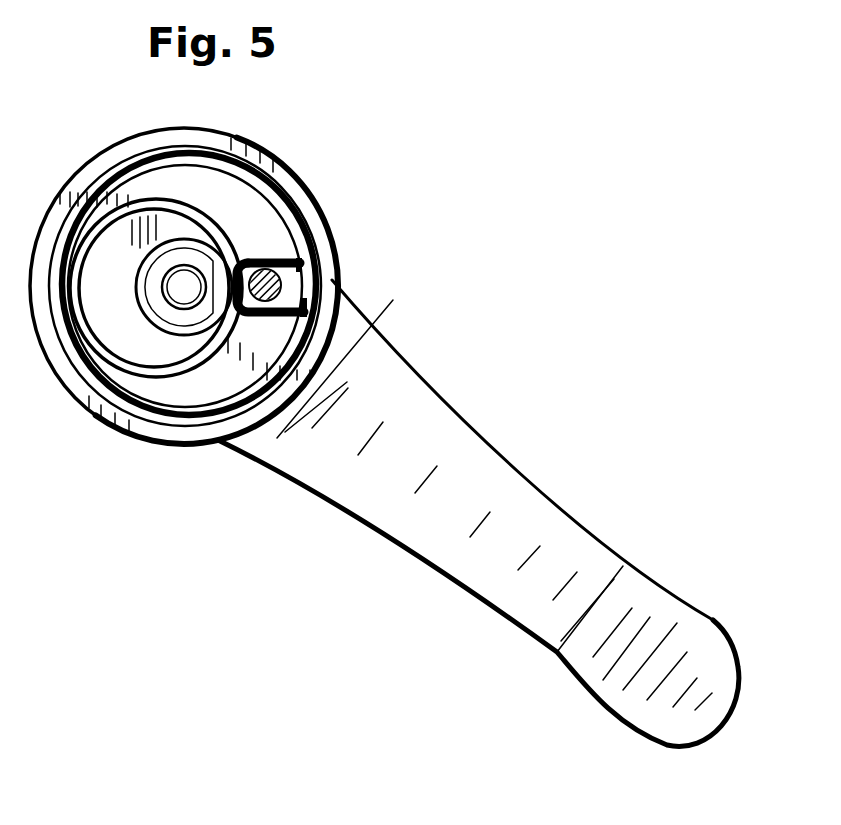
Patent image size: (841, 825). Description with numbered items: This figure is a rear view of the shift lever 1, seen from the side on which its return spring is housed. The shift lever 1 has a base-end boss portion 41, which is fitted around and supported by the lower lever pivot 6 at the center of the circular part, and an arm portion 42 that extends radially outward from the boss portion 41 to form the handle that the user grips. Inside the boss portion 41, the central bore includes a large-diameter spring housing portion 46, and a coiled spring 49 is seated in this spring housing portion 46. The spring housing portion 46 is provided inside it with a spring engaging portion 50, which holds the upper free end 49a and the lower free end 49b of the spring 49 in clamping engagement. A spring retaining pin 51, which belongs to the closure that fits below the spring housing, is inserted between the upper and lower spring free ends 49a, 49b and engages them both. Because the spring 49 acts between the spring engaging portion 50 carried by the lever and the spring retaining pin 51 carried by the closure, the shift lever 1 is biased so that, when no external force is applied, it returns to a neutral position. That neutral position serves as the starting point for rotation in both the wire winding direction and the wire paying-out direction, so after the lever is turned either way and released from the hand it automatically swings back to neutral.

The shift lever 1 is at (405, 366).
The lower lever pivot 6 is at (171, 333).
The base-end boss portion 41 is at (287, 165).
The arm portion 42 is at (436, 423).
The spring housing portion 46 is at (227, 188).
The coiled spring 49 is at (140, 200).
The upper free end of the spring 49a is at (357, 354).
The lower free end of the spring 49b is at (270, 247).
The spring engaging portion 50 is at (297, 287).
The spring retaining pin 51 is at (258, 302).